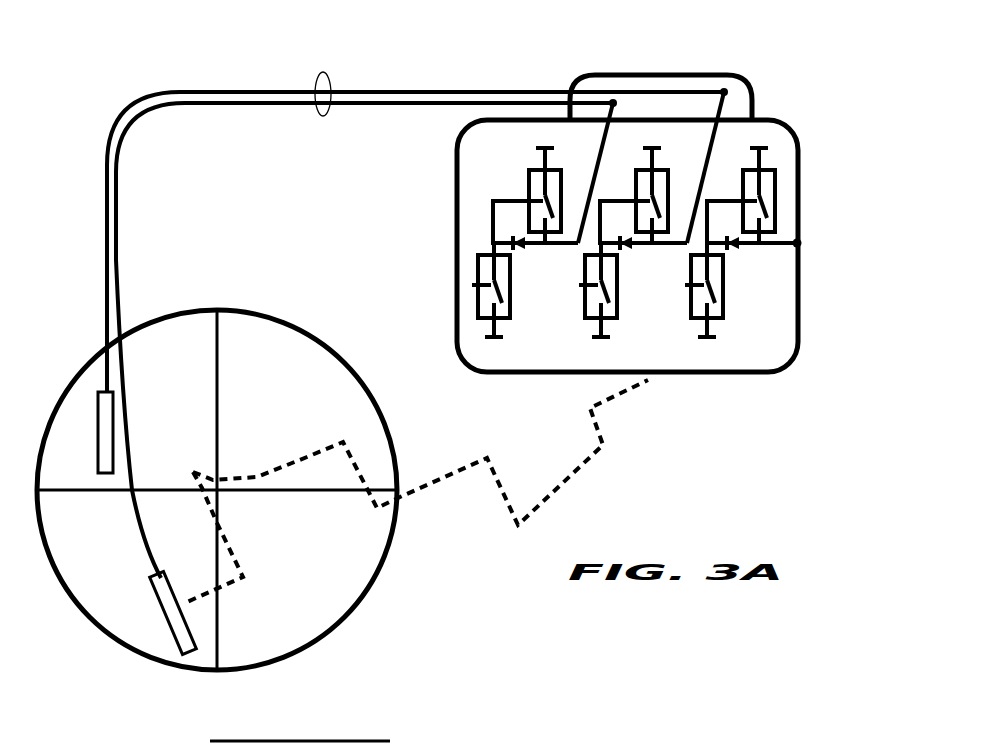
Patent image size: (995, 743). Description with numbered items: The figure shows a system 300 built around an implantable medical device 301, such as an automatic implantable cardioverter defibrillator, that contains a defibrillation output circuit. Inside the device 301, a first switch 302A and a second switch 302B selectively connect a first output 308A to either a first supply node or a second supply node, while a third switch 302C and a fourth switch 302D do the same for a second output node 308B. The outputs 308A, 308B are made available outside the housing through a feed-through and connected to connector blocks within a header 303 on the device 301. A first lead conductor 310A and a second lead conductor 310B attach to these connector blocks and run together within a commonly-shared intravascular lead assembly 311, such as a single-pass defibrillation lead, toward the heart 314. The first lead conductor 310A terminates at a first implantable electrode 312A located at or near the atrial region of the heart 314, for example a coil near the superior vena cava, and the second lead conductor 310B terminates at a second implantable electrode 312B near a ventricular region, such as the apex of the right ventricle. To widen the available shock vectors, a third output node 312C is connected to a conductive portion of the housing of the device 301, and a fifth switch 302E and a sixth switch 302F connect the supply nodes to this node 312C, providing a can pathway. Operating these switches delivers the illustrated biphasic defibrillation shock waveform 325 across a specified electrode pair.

The system 300 is at (208, 186).
The implantable medical device 301 is at (715, 375).
The first switch 302A is at (531, 175).
The second switch 302B is at (511, 311).
The third switch 302C is at (665, 175).
The fourth switch 302D is at (650, 294).
The fifth switch 302E is at (776, 188).
The sixth switch 302F is at (723, 308).
The header 303 is at (748, 80).
The first output 308A is at (602, 142).
The second output node 308B is at (730, 96).
The first lead conductor 310A is at (107, 170).
The second lead conductor 310B is at (398, 106).
The intravascular lead assembly 311 is at (323, 117).
The first implantable electrode 312A is at (98, 430).
The second implantable electrode 312B is at (164, 614).
The third output node 312C is at (800, 246).
The heart 314 is at (313, 333).
The biphasic defibrillation shock waveform 325 is at (445, 478).